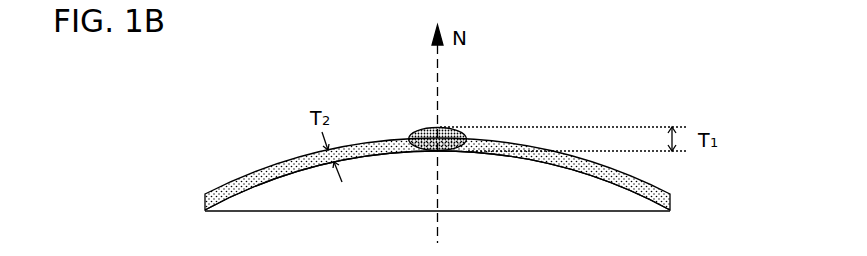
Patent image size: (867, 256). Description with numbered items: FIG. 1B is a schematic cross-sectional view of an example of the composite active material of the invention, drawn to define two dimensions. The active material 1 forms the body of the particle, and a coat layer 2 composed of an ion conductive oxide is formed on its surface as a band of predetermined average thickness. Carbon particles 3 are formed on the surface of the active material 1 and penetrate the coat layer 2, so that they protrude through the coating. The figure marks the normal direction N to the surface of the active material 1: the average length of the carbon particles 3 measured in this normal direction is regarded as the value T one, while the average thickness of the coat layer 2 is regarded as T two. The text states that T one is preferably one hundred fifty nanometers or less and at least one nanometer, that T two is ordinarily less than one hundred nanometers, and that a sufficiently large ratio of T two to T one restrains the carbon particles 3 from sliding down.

The active material 1 is at (258, 198).
The coat layer 2 is at (272, 170).
The carbon particles 3 is at (418, 128).